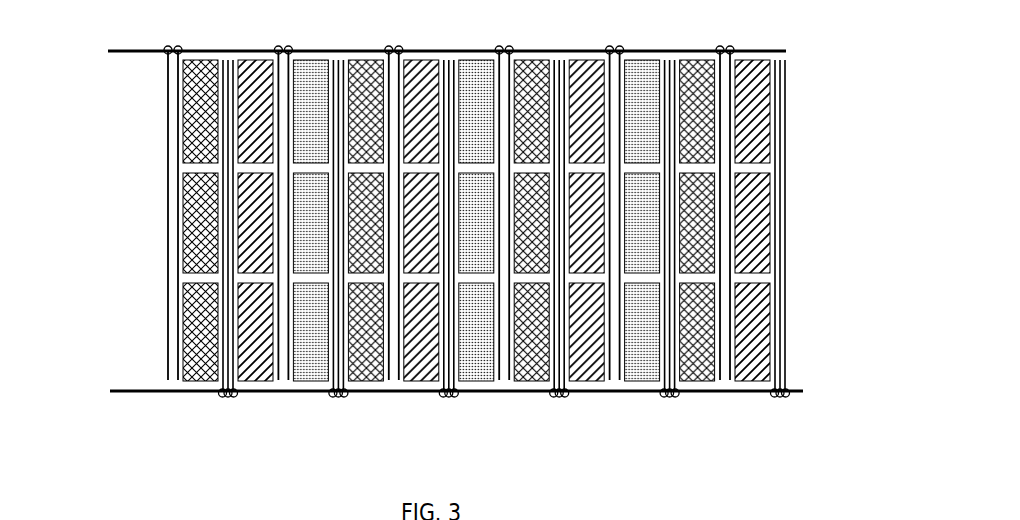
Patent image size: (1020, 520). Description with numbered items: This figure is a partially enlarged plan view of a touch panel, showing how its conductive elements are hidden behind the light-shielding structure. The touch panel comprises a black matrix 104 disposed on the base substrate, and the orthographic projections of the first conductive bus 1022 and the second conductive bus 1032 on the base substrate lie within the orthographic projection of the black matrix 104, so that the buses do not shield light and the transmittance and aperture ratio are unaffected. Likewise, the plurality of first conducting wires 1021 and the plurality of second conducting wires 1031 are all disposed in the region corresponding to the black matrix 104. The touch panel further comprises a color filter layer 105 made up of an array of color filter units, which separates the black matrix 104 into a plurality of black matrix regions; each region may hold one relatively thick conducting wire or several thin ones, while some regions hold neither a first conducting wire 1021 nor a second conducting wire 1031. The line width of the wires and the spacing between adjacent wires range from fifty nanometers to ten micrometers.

The first conductive bus 1022 is at (130, 44).
The first conducting wires 1021 is at (160, 75).
The black matrix 104 is at (757, 45).
The color filter layer 105 is at (172, 333).
The second conducting wires 1031 is at (209, 390).
The second conductive bus 1032 is at (289, 386).